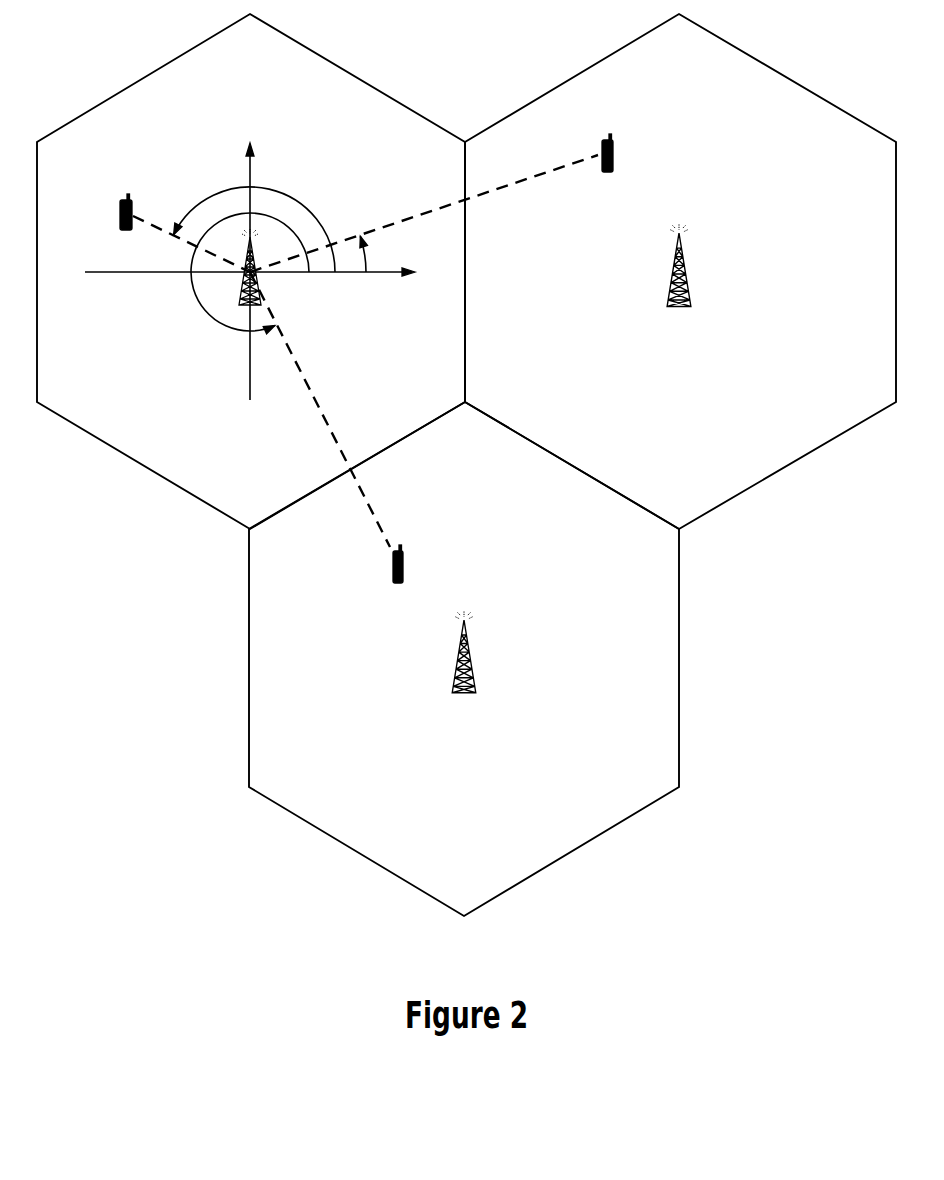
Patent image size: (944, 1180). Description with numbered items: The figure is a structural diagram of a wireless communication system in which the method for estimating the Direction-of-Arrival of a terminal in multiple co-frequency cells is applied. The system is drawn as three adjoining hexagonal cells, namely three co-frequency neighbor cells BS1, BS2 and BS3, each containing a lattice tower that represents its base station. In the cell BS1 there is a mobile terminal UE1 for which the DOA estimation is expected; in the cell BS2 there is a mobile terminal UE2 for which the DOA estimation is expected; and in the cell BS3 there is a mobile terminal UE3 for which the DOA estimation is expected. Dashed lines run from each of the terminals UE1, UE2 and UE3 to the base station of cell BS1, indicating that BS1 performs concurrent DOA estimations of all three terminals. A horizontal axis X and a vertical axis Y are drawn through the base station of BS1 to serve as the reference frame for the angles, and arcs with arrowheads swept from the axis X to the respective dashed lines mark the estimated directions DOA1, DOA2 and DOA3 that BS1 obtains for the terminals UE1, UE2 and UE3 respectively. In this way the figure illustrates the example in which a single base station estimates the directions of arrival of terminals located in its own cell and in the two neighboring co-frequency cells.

The first co-frequency neighbor cell BS1 is at (275, 267).
The second co-frequency neighbor cell BS2 is at (707, 265).
The third co-frequency neighbor cell BS3 is at (493, 651).
The mobile terminal UE1 is at (121, 229).
The mobile terminal UE2 is at (609, 169).
The mobile terminal UE3 is at (391, 584).
The Direction-of-Arrival of UE1 DOA1 is at (238, 225).
The Direction-of-Arrival of UE2 DOA2 is at (392, 253).
The Direction-of-Arrival of UE3 DOA3 is at (250, 313).
The X axis X is at (251, 285).
The Y axis Y is at (265, 268).